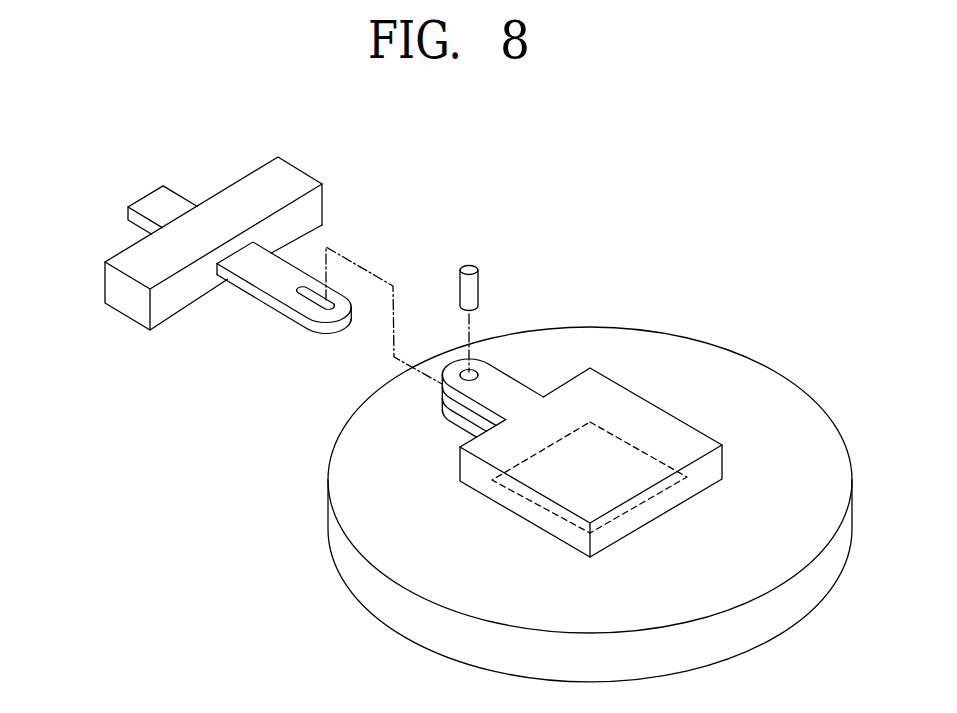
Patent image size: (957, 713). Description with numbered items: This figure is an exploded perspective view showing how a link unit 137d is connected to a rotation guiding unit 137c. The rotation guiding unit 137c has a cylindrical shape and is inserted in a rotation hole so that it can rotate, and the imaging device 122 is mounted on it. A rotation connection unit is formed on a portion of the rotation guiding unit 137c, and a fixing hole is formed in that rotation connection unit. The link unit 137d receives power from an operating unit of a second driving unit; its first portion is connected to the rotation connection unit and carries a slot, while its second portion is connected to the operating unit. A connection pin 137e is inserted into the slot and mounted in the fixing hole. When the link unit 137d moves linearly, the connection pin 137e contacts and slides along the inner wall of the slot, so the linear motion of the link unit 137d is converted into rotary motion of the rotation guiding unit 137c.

The link unit 137d is at (313, 157).
The connection pin 137e is at (476, 270).
The rotation guiding unit 137c is at (758, 390).
The imaging device 122 is at (520, 514).